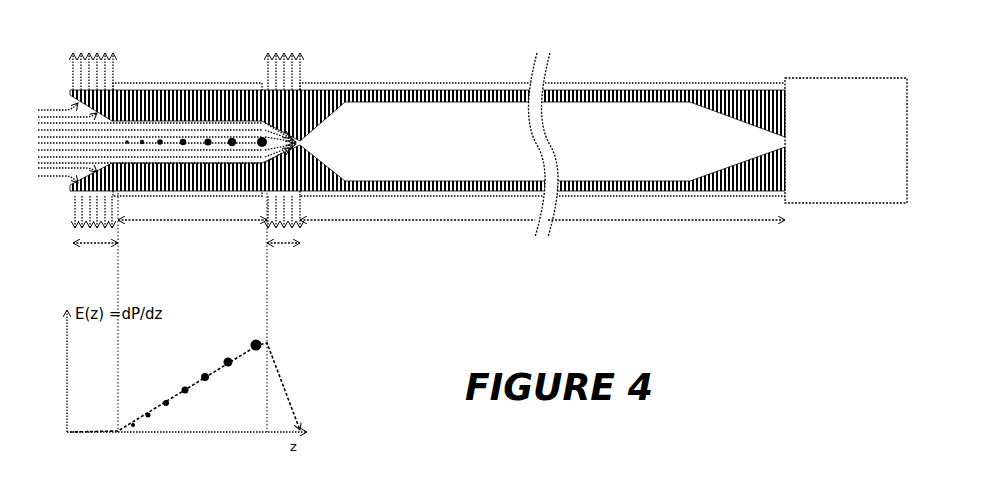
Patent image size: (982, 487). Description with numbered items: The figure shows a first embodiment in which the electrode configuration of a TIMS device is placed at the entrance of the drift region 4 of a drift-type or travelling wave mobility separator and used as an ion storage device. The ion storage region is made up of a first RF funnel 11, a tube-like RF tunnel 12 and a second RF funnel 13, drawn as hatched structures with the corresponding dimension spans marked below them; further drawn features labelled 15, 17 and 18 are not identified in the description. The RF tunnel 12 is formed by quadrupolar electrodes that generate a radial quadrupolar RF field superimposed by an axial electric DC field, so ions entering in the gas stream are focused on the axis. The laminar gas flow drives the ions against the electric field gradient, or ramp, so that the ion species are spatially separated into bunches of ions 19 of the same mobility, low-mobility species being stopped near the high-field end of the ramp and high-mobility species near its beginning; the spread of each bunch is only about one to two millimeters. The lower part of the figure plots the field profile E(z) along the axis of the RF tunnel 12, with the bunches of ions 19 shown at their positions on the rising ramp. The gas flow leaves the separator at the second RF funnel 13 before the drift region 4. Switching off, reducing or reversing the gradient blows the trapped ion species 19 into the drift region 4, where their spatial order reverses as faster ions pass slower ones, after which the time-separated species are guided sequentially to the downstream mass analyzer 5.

The drift region 4 is at (427, 146).
The mass analyzer 5 is at (846, 140).
The first RF funnel 11 is at (95, 252).
The RF tunnel 12 is at (192, 312).
The second RF funnel 13 is at (283, 252).
The input light 15 is at (167, 143).
The first field/electrode region 17 is at (102, 140).
The second field/electrode region 18 is at (295, 140).
The bunches of ions 19 is at (177, 244).